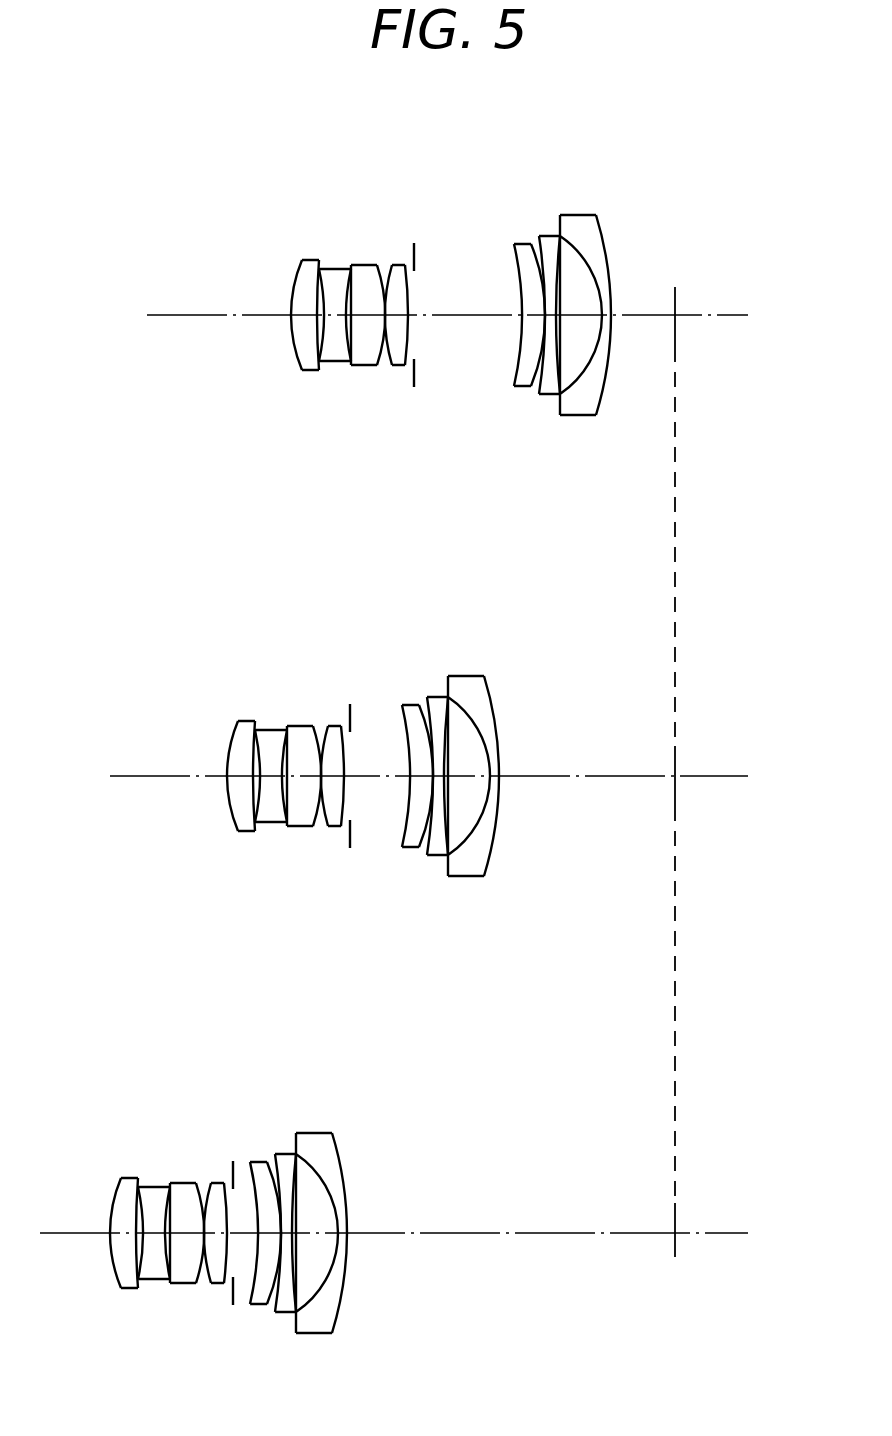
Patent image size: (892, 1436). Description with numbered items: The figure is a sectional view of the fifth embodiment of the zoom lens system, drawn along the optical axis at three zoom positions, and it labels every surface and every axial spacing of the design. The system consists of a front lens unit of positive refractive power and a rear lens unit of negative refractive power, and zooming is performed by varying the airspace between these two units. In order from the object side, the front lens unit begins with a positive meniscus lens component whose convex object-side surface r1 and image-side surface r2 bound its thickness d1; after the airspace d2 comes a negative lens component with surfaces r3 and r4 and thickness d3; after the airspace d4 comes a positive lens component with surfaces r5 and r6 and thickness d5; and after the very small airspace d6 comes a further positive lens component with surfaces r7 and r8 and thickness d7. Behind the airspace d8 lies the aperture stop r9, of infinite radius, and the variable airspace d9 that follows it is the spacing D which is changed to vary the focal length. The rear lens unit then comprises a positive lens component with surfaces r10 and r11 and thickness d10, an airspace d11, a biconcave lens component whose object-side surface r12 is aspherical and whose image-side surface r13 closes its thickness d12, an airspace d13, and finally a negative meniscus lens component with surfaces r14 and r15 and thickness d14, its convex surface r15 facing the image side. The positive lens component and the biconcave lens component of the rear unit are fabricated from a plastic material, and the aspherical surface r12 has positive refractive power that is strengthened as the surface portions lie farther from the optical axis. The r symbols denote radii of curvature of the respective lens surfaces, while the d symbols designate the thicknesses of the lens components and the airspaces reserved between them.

The radius of curvature of first lens surface r1 is at (300, 277).
The radius of curvature of second lens surface r2 is at (306, 270).
The radius of curvature of third lens surface r3 is at (330, 266).
The radius of curvature of fourth lens surface r4 is at (340, 266).
The radius of curvature of fifth lens surface r5 is at (360, 263).
The radius of curvature of sixth lens surface r6 is at (370, 263).
The radius of curvature of seventh lens surface r7 is at (388, 264).
The radius of curvature of eighth lens surface r8 is at (403, 265).
The stop r9 is at (413, 247).
The radius of curvature of tenth lens surface r10 is at (515, 266).
The radius of curvature of eleventh lens surface r11 is at (518, 243).
The aspherical surface r12 is at (546, 236).
The radius of curvature of thirteenth lens surface r13 is at (553, 252).
The radius of curvature of fourteenth lens surface r14 is at (577, 240).
The radius of curvature of fifteenth lens surface r15 is at (603, 224).
The thickness of first lens component d1 is at (302, 332).
The airspace between first and second lens components d2 is at (304, 342).
The thickness of second lens component d3 is at (322, 366).
The airspace between second and third lens components d4 is at (343, 367).
The thickness of third lens component d5 is at (367, 366).
The airspace between third and fourth lens components d6 is at (397, 364).
The thickness of fourth lens component d7 is at (405, 364).
The airspace between fourth lens component and stop d8 is at (412, 332).
The variable airspace d9 is at (460, 318).
The thickness of fifth lens component d10 is at (548, 324).
The airspace between fifth and sixth lens components d11 is at (540, 332).
The thickness of sixth lens component d12 is at (542, 378).
The airspace between sixth and seventh lens components d13 is at (582, 414).
The thickness of seventh lens component d14 is at (610, 364).